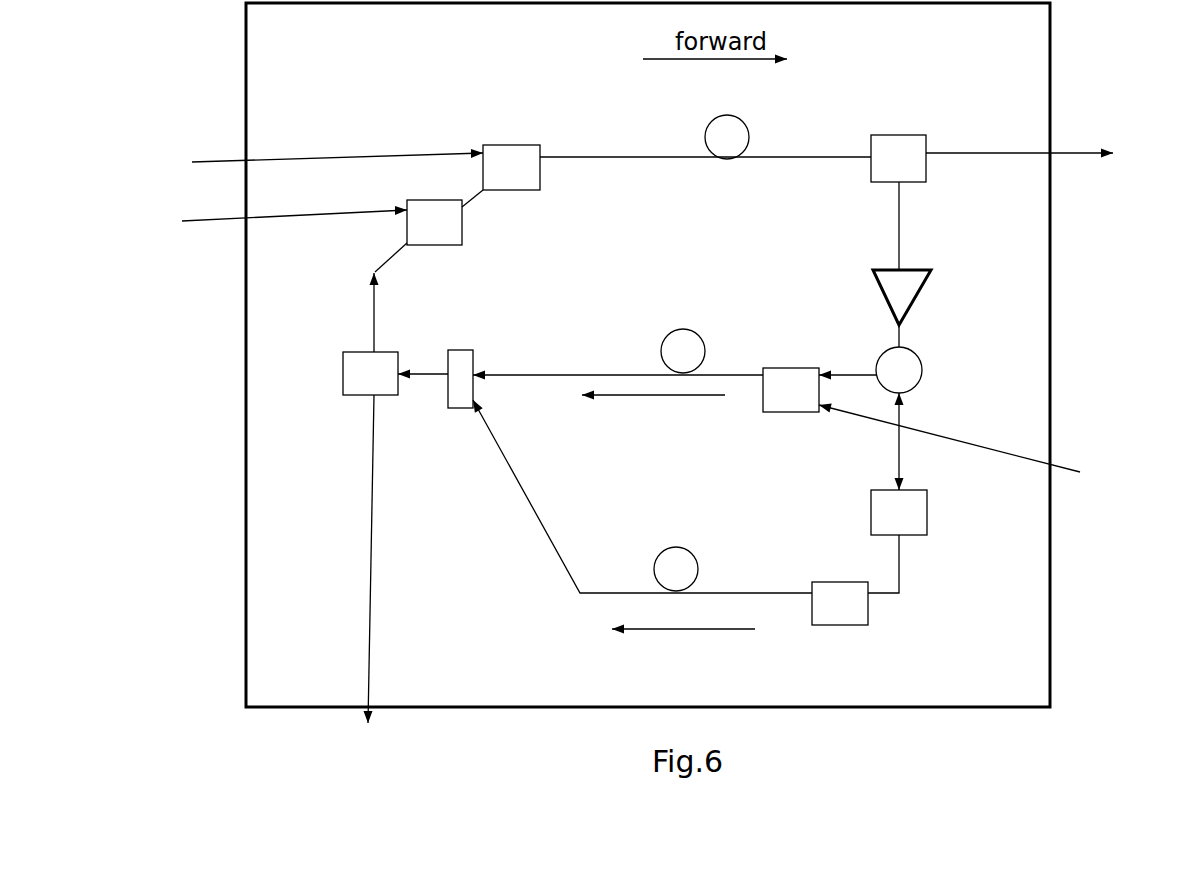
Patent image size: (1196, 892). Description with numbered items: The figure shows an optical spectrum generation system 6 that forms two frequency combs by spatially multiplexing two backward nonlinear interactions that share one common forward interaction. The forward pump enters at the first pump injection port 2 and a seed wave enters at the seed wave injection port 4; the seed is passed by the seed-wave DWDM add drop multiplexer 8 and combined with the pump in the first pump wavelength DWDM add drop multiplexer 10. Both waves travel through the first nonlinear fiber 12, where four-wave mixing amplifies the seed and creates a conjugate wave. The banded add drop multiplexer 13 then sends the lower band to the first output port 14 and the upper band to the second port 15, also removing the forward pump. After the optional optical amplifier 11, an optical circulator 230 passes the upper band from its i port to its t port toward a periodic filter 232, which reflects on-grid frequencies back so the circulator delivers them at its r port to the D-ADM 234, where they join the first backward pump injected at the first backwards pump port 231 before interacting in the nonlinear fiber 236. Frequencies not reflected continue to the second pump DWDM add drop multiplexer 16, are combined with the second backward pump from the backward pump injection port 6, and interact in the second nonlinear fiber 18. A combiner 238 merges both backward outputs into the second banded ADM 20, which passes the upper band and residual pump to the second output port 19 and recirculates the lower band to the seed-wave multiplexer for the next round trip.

The backward pump injection port 6 is at (1067, 648).
The first pump injection port 2 is at (316, 121).
The seed wave injection port 4 is at (294, 200).
The seed-wave DWDM add drop multiplexer 8 is at (445, 207).
The first pump wavelength DWDM add drop multiplexer 10 is at (511, 148).
The first nonlinear fiber 12 is at (705, 120).
The banded add drop multiplexer 13 is at (898, 141).
The first output port 14 is at (1050, 144).
The second port 15 is at (964, 226).
The optical amplifier 11 is at (923, 308).
The optical circulator 230 is at (900, 408).
The D-ADM 234 is at (792, 368).
The first backwards pump port 231 is at (997, 457).
The periodic filter 232 is at (928, 541).
The second pump DWDM add drop multiplexer 16 is at (840, 584).
The second nonlinear fiber 18 is at (642, 537).
The nonlinear fiber 236 is at (618, 359).
The combiner 238 is at (444, 362).
The second banded ADM 20 is at (350, 319).
The second output port 19 is at (380, 578).